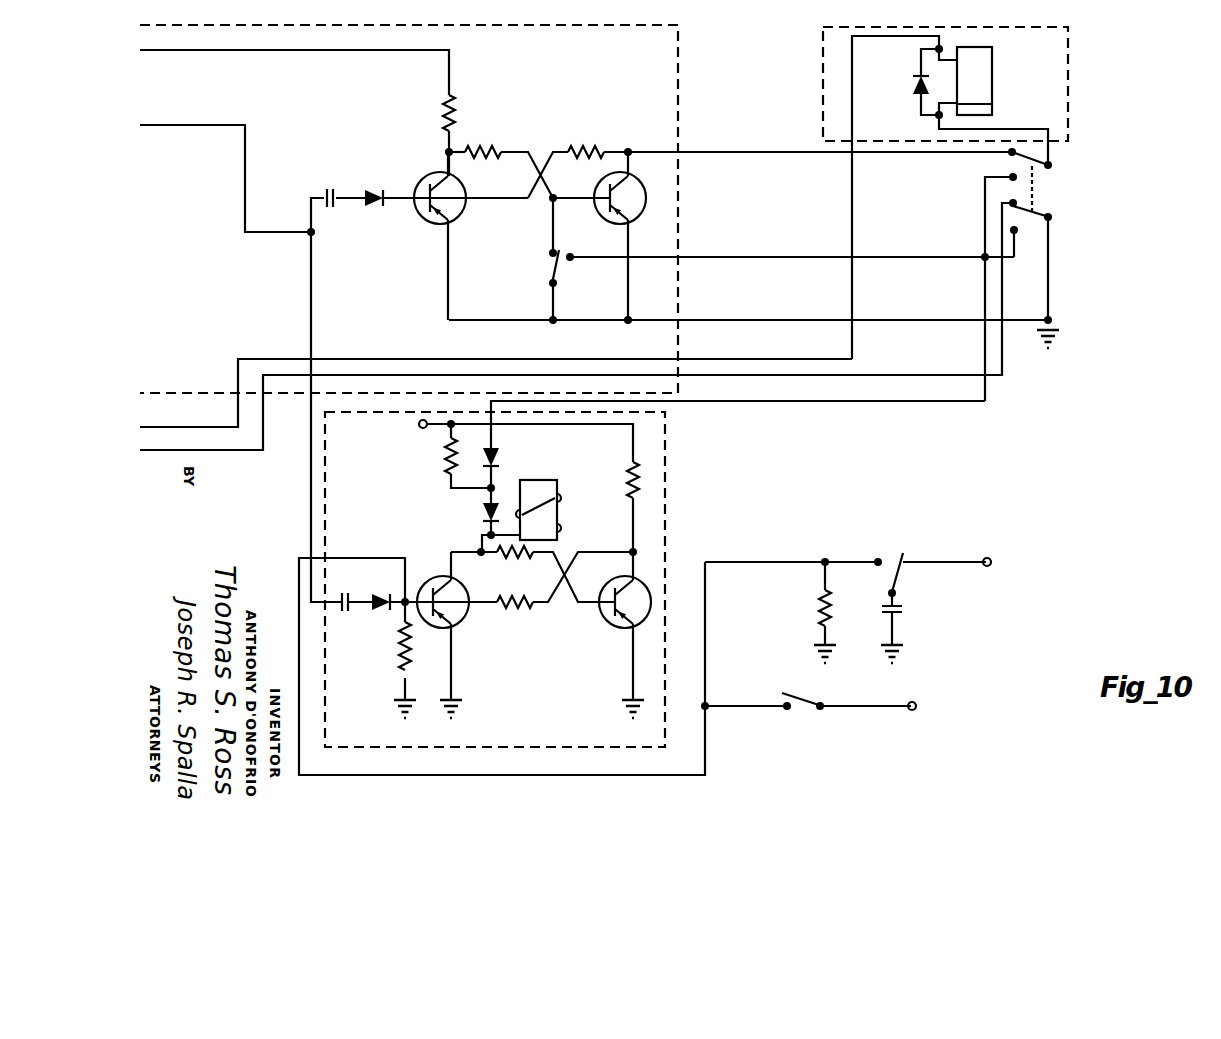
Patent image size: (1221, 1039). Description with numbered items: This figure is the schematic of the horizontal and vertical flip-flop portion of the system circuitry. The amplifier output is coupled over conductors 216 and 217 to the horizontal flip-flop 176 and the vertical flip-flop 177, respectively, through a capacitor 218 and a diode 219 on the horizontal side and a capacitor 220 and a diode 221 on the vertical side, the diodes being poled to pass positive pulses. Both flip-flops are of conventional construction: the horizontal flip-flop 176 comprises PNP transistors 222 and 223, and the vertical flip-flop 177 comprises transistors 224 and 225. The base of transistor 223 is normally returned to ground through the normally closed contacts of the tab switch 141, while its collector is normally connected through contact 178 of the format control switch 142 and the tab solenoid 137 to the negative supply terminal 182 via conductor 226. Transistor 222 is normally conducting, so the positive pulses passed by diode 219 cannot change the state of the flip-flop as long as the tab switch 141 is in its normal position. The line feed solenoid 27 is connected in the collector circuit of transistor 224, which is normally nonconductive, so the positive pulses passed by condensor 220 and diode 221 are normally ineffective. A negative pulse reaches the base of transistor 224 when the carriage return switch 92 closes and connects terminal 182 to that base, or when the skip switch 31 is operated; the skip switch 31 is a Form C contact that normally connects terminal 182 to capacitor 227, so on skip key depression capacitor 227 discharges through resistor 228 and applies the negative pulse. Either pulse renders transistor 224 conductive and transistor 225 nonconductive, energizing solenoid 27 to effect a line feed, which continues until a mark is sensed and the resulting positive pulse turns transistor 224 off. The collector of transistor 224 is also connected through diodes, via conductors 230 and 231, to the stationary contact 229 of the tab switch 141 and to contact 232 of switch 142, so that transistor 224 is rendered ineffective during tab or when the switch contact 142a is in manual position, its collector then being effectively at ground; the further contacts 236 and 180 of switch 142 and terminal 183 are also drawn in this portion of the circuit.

The horizontal flip-flop 176 is at (680, 78).
The tab solenoid 137 is at (1070, 60).
The contact of format control switch 178 is at (1052, 152).
The format control switch 142 is at (1042, 187).
The switch contact 142a is at (1050, 217).
The contact 236 is at (1011, 176).
The contact 180 is at (1010, 203).
The contact of switch 142 232 is at (1020, 234).
The conductor 231 is at (742, 258).
The stationary contact of tab switch 229 is at (571, 260).
The tab switch 141 is at (547, 273).
The transistor 222 is at (427, 206).
The transistor 223 is at (630, 205).
The conductor 216 is at (245, 180).
The conductor 217 is at (310, 300).
The capacitor 218 is at (327, 189).
The diode 219 is at (378, 188).
The conductor 226 is at (741, 359).
The conductor 230 is at (848, 402).
The vertical flip-flop 177 is at (325, 700).
The terminal 183 is at (420, 428).
The line feed solenoid 27 is at (540, 480).
The capacitor 220 is at (345, 610).
The diode 221 is at (376, 599).
The transistor 224 is at (460, 625).
The transistor 225 is at (619, 625).
The resistor 228 is at (822, 590).
The skip switch 31 is at (892, 545).
The capacitor 227 is at (896, 607).
The negative supply terminal 182 is at (987, 557).
The carriage return switch 92 is at (806, 690).